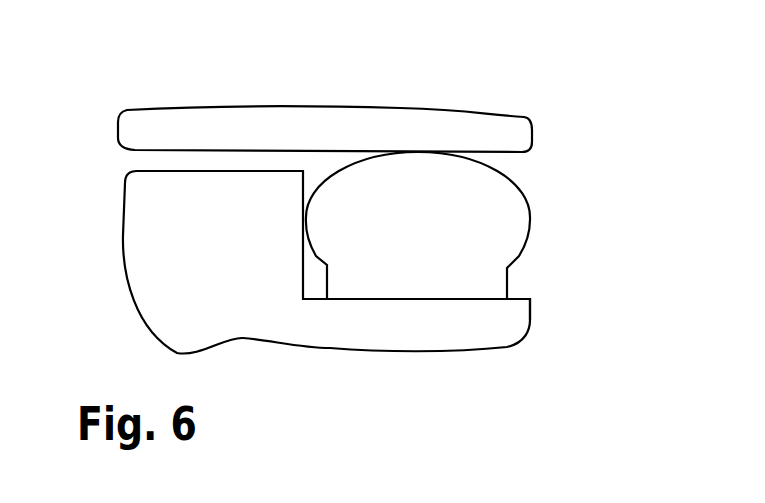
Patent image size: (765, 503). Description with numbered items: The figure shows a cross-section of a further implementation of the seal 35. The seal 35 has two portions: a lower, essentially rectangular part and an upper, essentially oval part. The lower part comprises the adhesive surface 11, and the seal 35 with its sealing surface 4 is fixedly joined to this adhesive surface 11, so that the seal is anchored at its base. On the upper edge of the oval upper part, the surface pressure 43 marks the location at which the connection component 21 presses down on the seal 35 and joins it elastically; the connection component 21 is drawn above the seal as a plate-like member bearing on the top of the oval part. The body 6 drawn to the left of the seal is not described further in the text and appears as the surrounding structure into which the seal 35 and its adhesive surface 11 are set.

The connection component 21 is at (235, 125).
The surface pressure 43 is at (418, 152).
The seal 35 is at (505, 205).
The sealing surface 4 is at (514, 300).
The base body 6 is at (143, 248).
The adhesive surface 11 is at (418, 299).